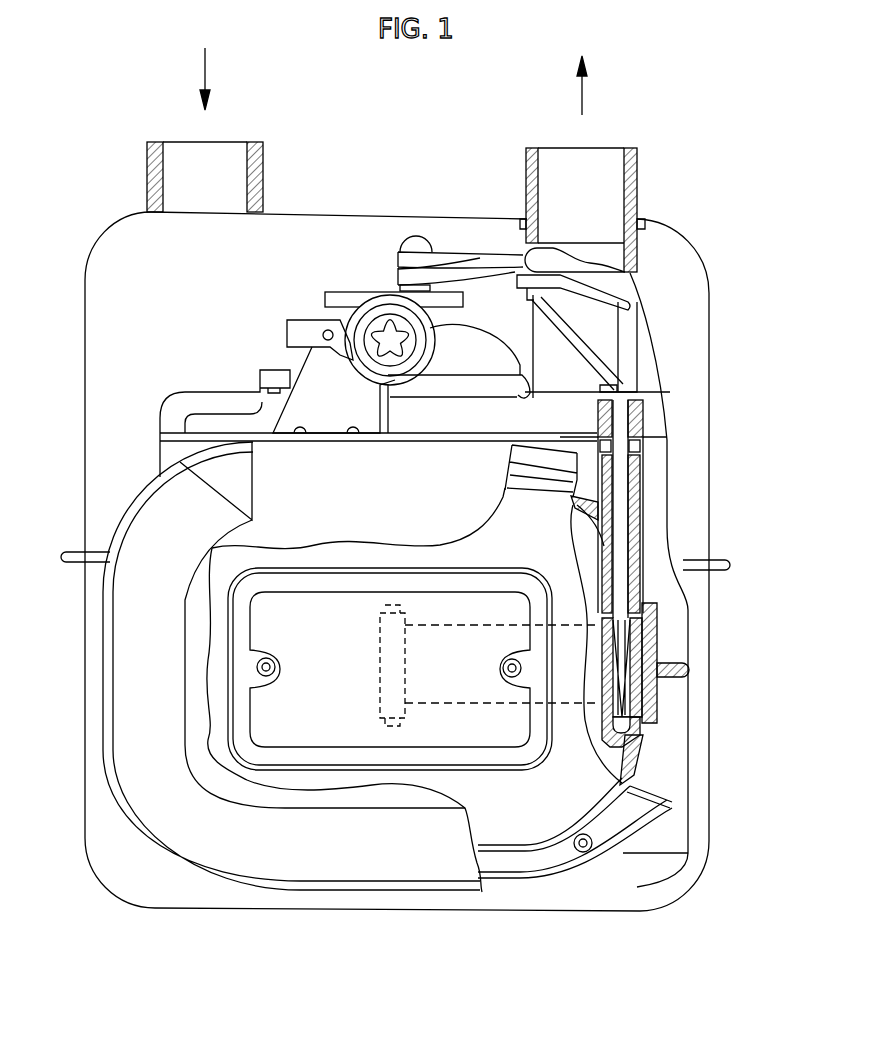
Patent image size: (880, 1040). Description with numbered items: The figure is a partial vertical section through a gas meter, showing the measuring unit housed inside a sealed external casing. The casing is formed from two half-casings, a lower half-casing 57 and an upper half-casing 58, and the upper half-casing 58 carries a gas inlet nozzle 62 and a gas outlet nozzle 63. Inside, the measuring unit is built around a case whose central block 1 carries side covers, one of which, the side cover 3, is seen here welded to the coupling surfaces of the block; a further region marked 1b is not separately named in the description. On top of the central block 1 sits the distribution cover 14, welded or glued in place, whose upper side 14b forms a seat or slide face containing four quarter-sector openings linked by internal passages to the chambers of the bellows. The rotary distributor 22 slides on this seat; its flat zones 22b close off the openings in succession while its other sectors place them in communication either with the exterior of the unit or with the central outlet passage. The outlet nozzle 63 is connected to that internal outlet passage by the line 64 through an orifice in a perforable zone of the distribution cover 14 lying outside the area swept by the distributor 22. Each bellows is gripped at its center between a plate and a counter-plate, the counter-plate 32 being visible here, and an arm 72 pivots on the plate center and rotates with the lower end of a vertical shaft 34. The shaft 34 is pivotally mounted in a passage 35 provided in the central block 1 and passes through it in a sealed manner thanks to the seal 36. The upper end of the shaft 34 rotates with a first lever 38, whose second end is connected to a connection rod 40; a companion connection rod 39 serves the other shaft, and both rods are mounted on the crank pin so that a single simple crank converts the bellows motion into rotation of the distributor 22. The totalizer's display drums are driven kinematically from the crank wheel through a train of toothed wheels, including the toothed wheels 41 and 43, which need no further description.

The central block 1 is at (683, 667).
The lower housing wall 1b is at (520, 885).
The side cover 3 is at (403, 857).
The distribution cover 14 is at (480, 423).
The upper side of the distribution cover 14b is at (260, 398).
The rotary distributor 22 is at (474, 361).
The flat zones 22b is at (275, 385).
The counter-plate 32 is at (513, 757).
The vertical shaft 34 is at (617, 500).
The passages 35 is at (630, 517).
The seal 36 is at (643, 443).
The first lever 38 is at (640, 377).
The connection rod 39 is at (443, 253).
The connection rod 40 is at (468, 264).
The toothed wheel 41 is at (345, 298).
The toothed wheel 43 is at (432, 316).
The lower half-casing 57 is at (85, 660).
The upper half-casing 58 is at (85, 350).
The gas inlet nozzle 62 is at (150, 162).
The gas outlet nozzle 63 is at (637, 170).
The line 64 is at (653, 322).
The arm 72 is at (462, 652).